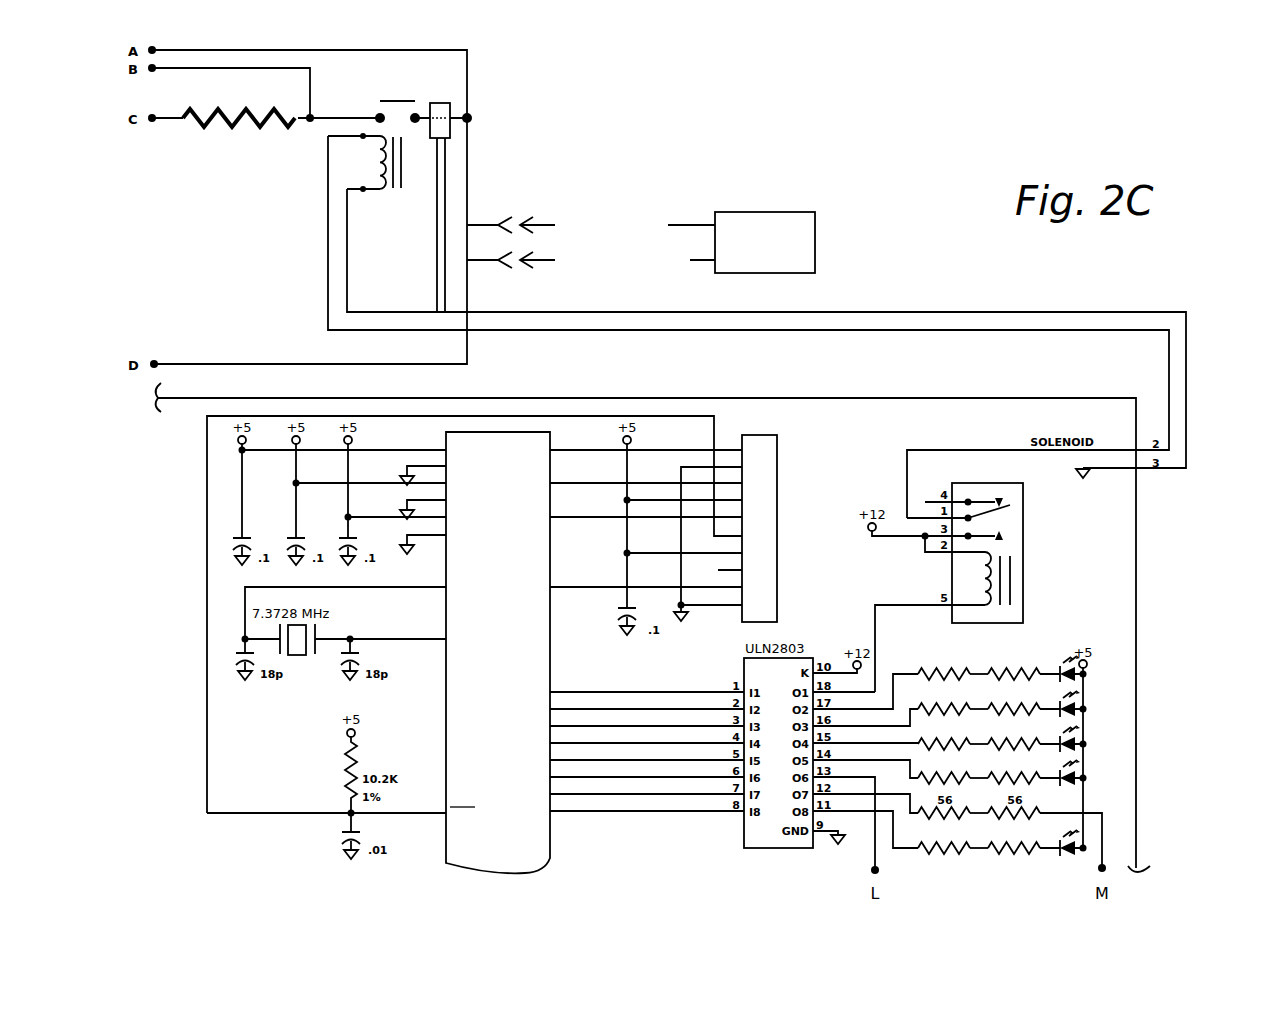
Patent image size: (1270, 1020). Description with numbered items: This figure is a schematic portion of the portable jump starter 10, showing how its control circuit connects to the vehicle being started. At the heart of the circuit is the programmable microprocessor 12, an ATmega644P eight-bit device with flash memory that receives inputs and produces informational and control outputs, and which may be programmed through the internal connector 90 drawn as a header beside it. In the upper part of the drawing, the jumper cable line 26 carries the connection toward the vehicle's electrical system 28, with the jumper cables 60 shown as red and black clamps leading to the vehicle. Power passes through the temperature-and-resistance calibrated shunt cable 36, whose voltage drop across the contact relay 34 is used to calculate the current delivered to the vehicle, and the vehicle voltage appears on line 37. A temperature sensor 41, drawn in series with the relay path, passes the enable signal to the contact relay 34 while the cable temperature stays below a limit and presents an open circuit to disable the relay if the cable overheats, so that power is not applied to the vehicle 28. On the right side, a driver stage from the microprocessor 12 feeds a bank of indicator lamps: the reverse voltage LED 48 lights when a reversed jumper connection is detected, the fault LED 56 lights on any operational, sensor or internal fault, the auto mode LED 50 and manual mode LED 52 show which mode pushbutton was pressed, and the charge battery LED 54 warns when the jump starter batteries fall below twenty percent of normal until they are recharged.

The jump starter 10 is at (891, 116).
The programmable microprocessor 12 is at (554, 858).
The line 26 is at (264, 68).
The vehicle's electrical system 28 is at (798, 212).
The contact relay 34 is at (399, 101).
The shunt cable 36 is at (248, 130).
The line 37 is at (458, 126).
The temperature sensor 41 is at (449, 106).
The reverse voltage LED 48 is at (1156, 674).
The auto mode LED 50 is at (1156, 744).
The manual mode LED 52 is at (1156, 848).
The charge battery LED 54 is at (1156, 778).
The fault LED 56 is at (1156, 709).
The jumper cables 60 is at (636, 203).
The internal connector 90 is at (777, 451).